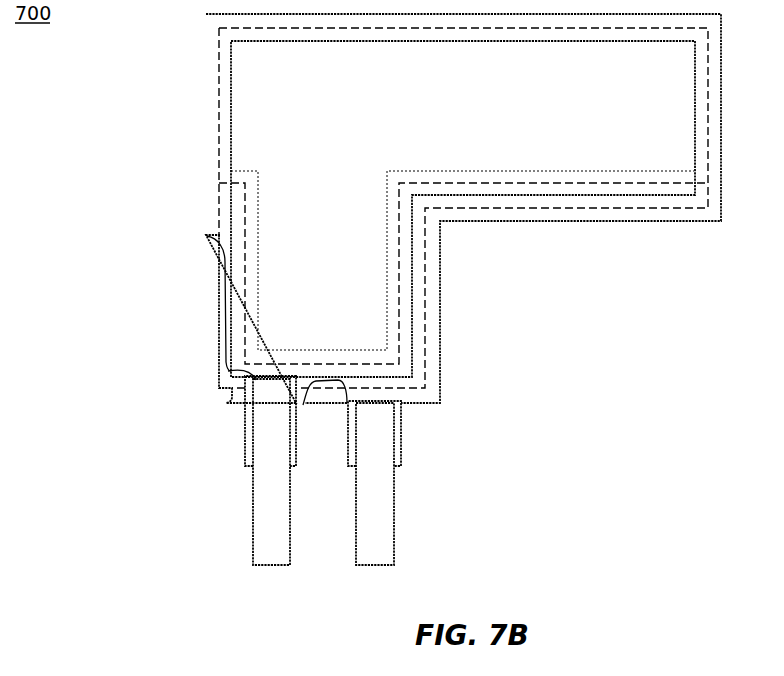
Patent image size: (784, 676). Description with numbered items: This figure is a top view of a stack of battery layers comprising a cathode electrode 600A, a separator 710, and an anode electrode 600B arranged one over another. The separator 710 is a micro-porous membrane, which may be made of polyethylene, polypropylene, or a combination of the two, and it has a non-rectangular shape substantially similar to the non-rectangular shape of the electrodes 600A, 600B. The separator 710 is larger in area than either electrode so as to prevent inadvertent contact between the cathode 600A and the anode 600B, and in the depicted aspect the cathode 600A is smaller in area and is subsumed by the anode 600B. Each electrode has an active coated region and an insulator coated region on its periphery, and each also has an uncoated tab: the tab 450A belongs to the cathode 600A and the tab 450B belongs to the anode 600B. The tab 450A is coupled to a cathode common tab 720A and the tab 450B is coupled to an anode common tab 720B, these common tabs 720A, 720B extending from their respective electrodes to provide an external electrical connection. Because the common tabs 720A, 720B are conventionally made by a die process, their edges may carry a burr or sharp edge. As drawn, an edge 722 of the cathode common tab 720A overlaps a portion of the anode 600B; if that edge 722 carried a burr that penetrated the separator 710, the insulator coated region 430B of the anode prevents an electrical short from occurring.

The cathode electrode 600A is at (233, 135).
The anode electrode 600B is at (221, 345).
The separator 710 is at (207, 232).
The edge 722 is at (228, 371).
The uncoated tab 450A is at (245, 445).
The uncoated tab 450B is at (403, 420).
The cathode common tab 720A is at (258, 530).
The anode common tab 720B is at (383, 528).
The insulator coated region 430B is at (318, 383).